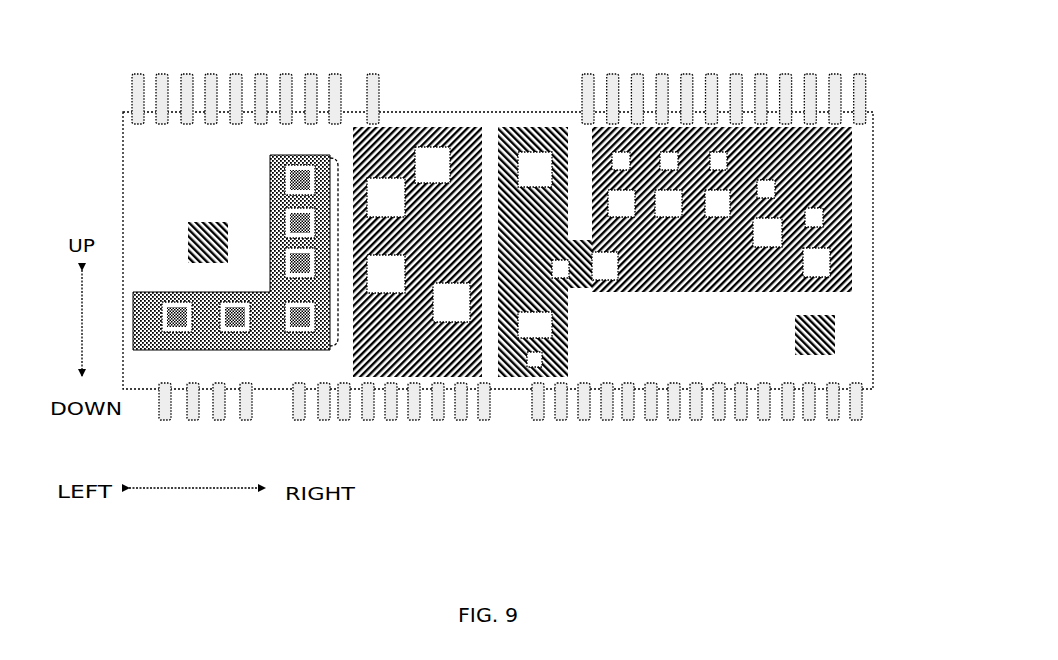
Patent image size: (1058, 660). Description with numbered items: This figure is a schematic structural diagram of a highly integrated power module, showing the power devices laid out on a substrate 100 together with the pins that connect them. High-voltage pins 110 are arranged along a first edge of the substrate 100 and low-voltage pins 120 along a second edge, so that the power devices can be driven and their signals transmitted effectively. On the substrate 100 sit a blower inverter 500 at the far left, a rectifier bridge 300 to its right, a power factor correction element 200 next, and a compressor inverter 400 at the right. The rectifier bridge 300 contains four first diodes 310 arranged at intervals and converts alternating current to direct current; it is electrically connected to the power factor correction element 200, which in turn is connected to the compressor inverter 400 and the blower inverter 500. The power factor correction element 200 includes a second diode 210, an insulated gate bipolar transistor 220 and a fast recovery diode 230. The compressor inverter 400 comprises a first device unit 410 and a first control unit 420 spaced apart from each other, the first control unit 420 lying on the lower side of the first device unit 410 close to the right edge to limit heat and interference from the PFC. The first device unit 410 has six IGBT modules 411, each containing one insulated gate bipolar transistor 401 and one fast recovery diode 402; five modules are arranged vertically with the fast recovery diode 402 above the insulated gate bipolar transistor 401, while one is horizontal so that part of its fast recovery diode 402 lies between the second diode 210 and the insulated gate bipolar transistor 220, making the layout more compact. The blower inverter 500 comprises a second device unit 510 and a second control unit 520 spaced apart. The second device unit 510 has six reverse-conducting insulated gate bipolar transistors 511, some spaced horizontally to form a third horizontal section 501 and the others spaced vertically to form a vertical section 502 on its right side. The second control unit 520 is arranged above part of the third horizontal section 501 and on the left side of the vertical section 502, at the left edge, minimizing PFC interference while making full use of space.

The substrate 100 is at (220, 158).
The high-voltage pins 110 is at (866, 99).
The low-voltage pins 120 is at (866, 400).
The power factor correction element 200 is at (562, 262).
The second diode 210 is at (535, 165).
The insulated gate bipolar transistor of the power factor correction element 220 is at (530, 330).
The fast recovery diode of the power factor correction element 230 is at (540, 360).
The rectifier bridge 300 is at (386, 206).
The first diodes 310 is at (460, 128).
The compressor inverter 400 is at (761, 330).
The insulated gate bipolar transistor 401 is at (574, 290).
The fast recovery diode 402 is at (607, 290).
The first device unit 410 is at (703, 292).
The IGBT modules 411 is at (852, 222).
The first control unit 420 is at (812, 355).
The blower inverter 500 is at (230, 311).
The third horizontal section 501 is at (263, 355).
The vertical section 502 is at (340, 250).
The second device unit 510 is at (270, 208).
The reverse-conducting insulated gate bipolar transistors 511 is at (300, 333).
The second control unit 520 is at (200, 222).